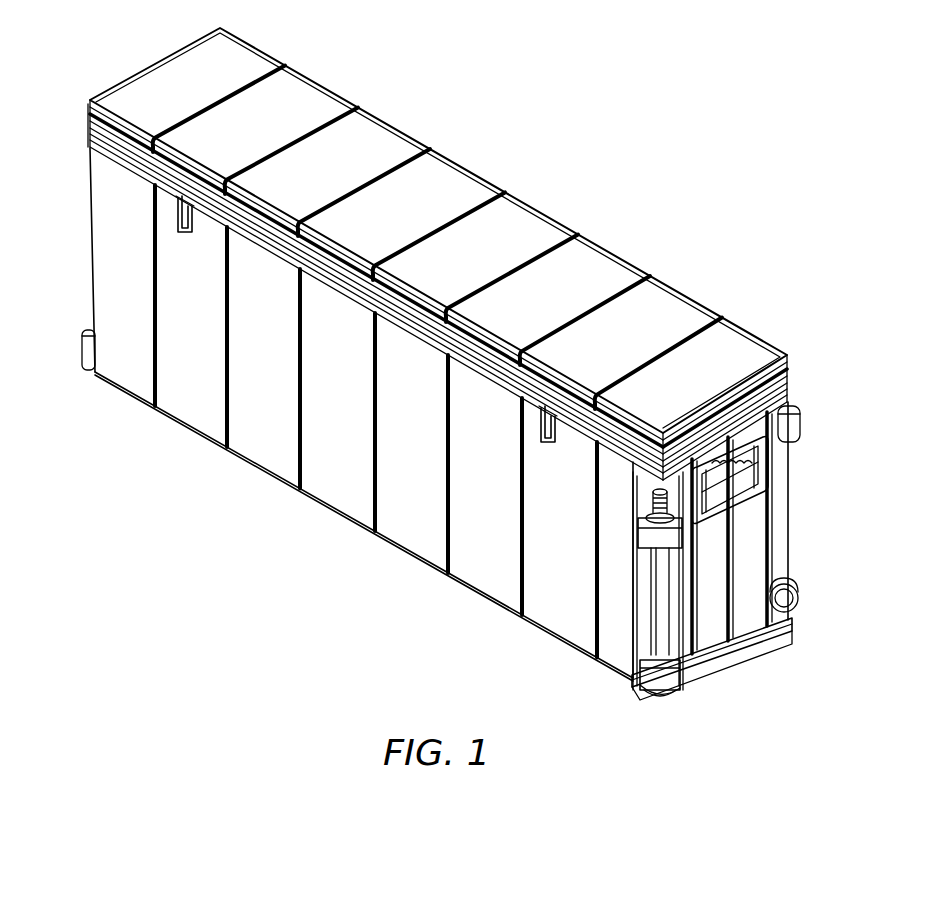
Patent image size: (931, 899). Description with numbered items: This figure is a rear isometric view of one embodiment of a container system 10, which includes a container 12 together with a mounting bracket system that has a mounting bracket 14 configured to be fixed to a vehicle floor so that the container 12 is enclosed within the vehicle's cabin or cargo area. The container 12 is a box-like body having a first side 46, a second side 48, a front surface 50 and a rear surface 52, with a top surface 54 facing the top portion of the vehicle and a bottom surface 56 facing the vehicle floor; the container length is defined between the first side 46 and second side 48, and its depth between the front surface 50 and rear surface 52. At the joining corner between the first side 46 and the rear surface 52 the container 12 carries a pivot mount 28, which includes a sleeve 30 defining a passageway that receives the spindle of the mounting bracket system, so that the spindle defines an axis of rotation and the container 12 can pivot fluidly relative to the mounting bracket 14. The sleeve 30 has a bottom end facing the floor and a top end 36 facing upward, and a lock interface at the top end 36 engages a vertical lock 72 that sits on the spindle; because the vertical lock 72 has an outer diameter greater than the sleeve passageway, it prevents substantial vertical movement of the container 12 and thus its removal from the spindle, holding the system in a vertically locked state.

The container system 10 is at (522, 52).
The container 12 is at (410, 520).
The mounting bracket 14 is at (700, 690).
The pivot mount 28 is at (723, 622).
The sleeve 30 is at (660, 630).
The top end 36 is at (661, 542).
The first side 46 is at (740, 632).
The second side 48 is at (90, 240).
The front surface 50 is at (617, 258).
The rear surface 52 is at (272, 445).
The top surface 54 is at (445, 182).
The bottom surface 56 is at (578, 648).
The vertical lock 72 is at (640, 478).